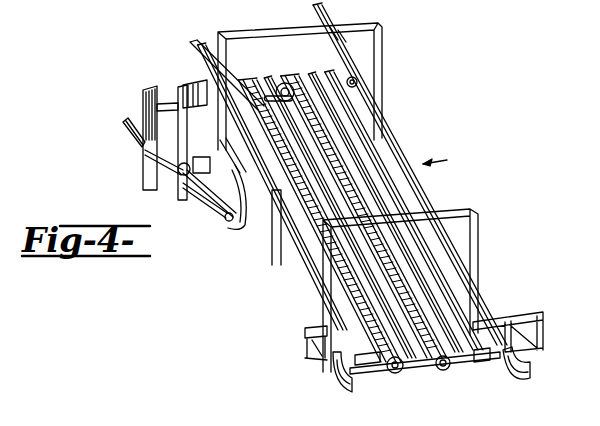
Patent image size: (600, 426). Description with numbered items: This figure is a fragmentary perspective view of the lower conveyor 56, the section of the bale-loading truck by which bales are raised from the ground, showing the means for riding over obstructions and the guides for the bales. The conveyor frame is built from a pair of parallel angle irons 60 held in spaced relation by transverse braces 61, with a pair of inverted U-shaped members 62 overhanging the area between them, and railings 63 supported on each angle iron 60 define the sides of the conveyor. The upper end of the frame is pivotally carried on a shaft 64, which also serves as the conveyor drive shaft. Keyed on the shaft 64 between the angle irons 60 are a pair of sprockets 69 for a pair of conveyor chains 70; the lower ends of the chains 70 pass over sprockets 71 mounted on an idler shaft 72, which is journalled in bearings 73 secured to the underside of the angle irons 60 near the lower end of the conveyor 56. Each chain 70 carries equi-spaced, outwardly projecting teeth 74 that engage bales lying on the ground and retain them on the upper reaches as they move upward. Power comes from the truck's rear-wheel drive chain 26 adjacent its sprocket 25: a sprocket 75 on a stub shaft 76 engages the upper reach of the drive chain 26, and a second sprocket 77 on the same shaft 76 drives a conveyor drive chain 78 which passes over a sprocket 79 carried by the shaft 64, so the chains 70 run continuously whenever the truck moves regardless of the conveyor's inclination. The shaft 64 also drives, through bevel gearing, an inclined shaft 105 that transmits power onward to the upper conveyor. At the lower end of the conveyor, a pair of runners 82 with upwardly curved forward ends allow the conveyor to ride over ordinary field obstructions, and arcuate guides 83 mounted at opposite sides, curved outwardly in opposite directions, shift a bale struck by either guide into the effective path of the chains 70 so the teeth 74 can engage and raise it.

The sprocket 25 is at (236, 224).
The drive chain 26 is at (224, 216).
The lower conveyor 56 is at (446, 157).
The angle irons 60 is at (297, 288).
The transverse braces 61 is at (335, 200).
The inverted U-shaped members 62 is at (381, 80).
The railings 63 is at (398, 142).
The shaft 64 is at (272, 94).
The sprockets 69 is at (288, 82).
The conveyor chains 70 is at (420, 372).
The sprockets 71 is at (396, 375).
The idler shaft 72 is at (372, 366).
The bearings 73 is at (482, 364).
The teeth 74 is at (352, 190).
The sprocket 75 is at (207, 172).
The stub shaft 76 is at (200, 193).
The second sprocket 77 is at (190, 183).
The conveyor drive chain 78 is at (165, 153).
The sprocket 79 is at (176, 102).
The runners 82 is at (340, 392).
The arcuate guides 83 is at (305, 358).
The inclined shaft 105 is at (340, 32).